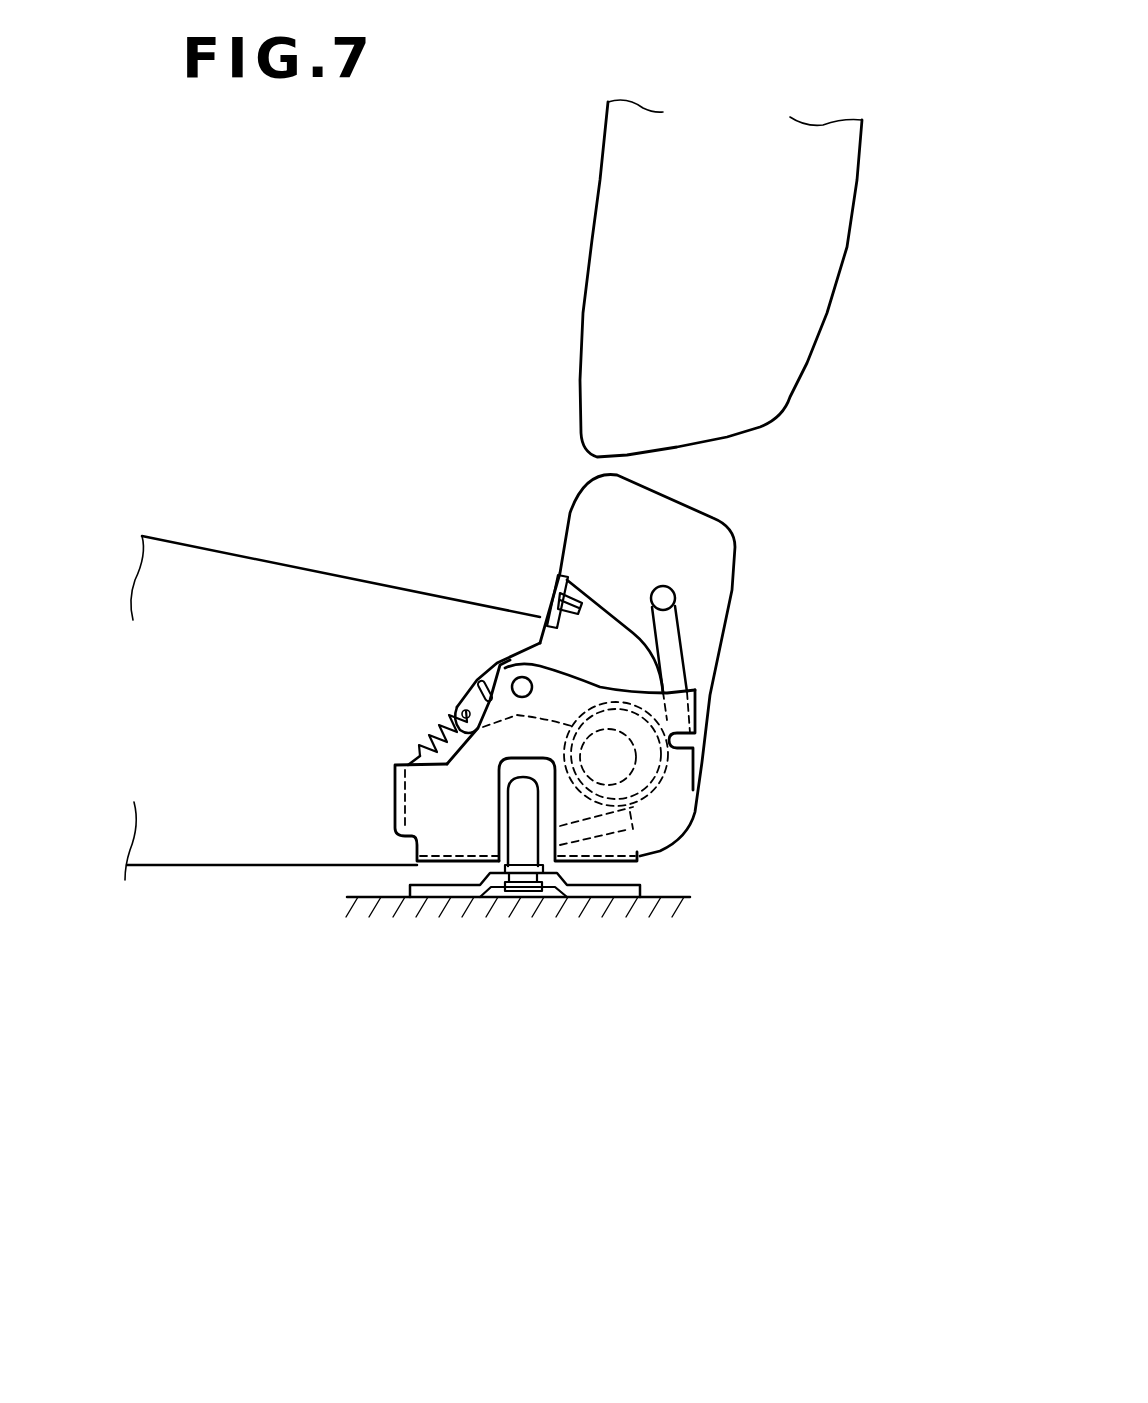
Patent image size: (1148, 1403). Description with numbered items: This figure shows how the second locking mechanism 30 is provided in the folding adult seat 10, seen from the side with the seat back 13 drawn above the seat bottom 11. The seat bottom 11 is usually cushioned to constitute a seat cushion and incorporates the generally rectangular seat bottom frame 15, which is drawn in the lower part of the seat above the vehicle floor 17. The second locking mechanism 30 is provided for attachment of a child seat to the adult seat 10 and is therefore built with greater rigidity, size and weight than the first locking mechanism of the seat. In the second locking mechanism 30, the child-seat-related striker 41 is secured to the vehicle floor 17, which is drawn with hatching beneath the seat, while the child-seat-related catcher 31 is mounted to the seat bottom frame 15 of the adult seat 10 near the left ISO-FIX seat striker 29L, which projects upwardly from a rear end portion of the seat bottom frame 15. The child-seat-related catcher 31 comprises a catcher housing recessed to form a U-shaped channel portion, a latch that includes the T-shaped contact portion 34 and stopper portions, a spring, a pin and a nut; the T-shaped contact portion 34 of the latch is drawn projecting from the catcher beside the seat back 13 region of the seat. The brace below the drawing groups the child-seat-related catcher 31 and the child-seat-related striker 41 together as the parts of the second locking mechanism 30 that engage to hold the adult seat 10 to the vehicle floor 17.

The folding adult seat 10 is at (317, 447).
The seat bottom 11 is at (228, 550).
The seat back 13 is at (590, 218).
The seat bottom frame 15 is at (677, 785).
The vehicle floor 17 is at (675, 897).
The left ISO-FIX seat striker 29L is at (677, 627).
The second locking mechanism 30 is at (628, 1047).
The child-seat-related catcher 31 is at (453, 872).
The T-shaped contact portion 34 is at (558, 584).
The child-seat-related striker 41 is at (562, 833).